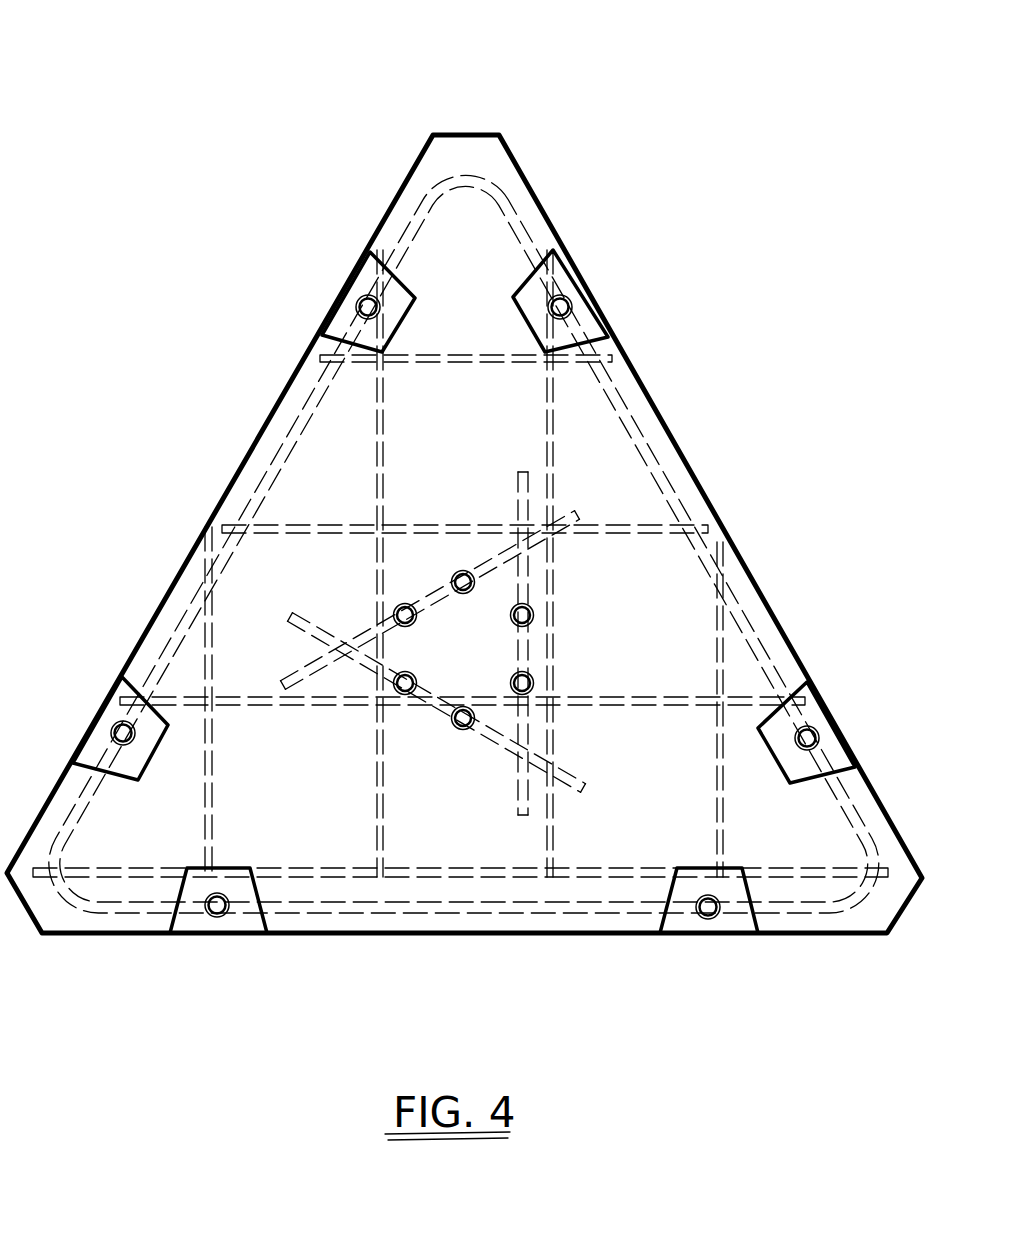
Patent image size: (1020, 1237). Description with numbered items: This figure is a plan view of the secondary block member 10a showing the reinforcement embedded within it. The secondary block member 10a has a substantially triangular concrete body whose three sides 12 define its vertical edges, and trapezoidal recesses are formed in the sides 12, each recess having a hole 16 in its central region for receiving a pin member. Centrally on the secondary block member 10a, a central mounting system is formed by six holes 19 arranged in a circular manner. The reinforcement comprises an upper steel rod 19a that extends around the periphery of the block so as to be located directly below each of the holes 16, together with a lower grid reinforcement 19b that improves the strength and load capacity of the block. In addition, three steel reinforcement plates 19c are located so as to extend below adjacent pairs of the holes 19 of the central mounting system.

The secondary block member 10a is at (240, 280).
The sides 12 is at (710, 508).
The hole 16 is at (568, 298).
The holes 19 is at (463, 732).
The steel rod 19a is at (517, 234).
The lower grid reinforcement 19b is at (677, 703).
The steel reinforcement plates 19c is at (527, 497).